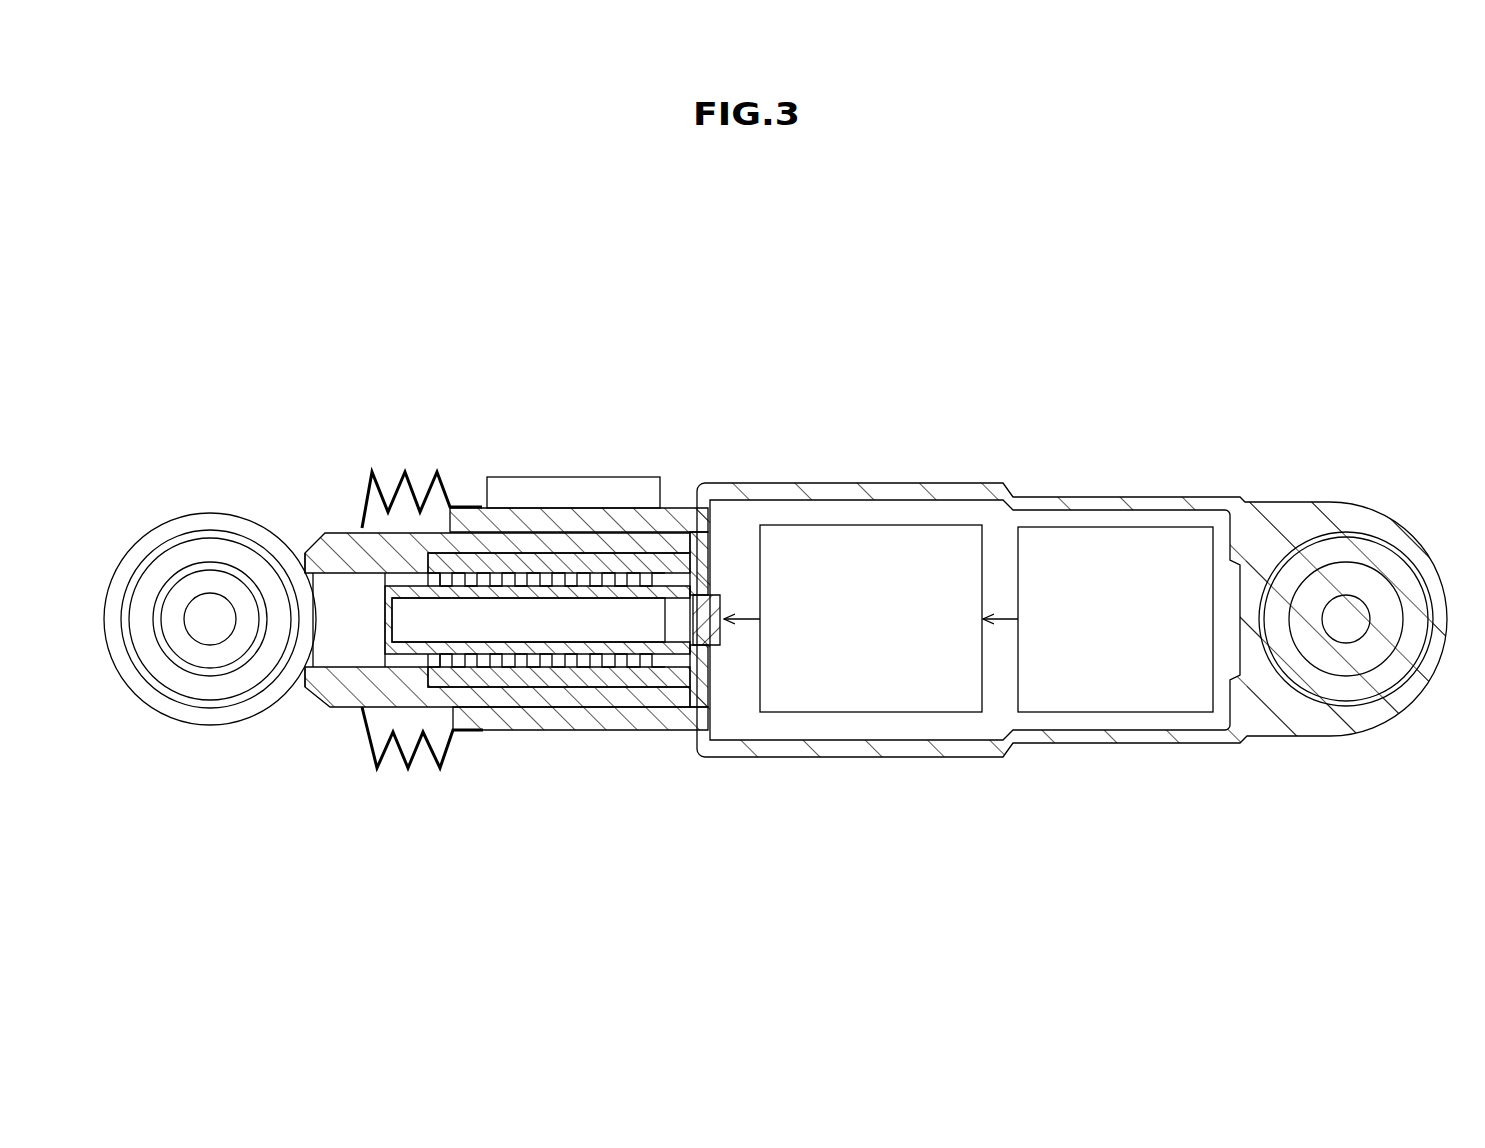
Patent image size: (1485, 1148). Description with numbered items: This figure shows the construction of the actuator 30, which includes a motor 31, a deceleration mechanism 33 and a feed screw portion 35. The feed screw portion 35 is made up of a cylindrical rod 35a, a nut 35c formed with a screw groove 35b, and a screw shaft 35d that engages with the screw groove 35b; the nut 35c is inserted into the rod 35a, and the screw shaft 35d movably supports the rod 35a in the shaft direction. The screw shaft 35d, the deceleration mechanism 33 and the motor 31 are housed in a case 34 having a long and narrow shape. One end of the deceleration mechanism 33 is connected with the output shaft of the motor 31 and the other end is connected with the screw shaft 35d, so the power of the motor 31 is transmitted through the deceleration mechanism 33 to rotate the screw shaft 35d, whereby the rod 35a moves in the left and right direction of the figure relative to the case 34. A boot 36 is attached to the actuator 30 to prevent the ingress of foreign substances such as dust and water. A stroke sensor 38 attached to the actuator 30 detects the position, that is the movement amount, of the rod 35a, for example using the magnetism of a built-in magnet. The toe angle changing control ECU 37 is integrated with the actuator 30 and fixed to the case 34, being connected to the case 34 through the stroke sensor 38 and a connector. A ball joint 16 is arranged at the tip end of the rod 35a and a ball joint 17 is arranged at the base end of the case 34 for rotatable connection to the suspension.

The ball joint 16 is at (178, 528).
The ball joint 17 is at (1390, 508).
The actuator 30 is at (1143, 337).
The motor 31 is at (1153, 527).
The deceleration mechanism 33 is at (870, 525).
The case 34 is at (537, 717).
The feed screw portion 35 is at (593, 738).
The cylindrical rod 35a is at (350, 698).
The screw groove 35b is at (463, 648).
The nut 35c is at (503, 673).
The screw shaft 35d is at (637, 654).
The boot 36 is at (405, 470).
The toe angle changing control ECU 37 is at (633, 476).
The stroke sensor 38 is at (547, 517).